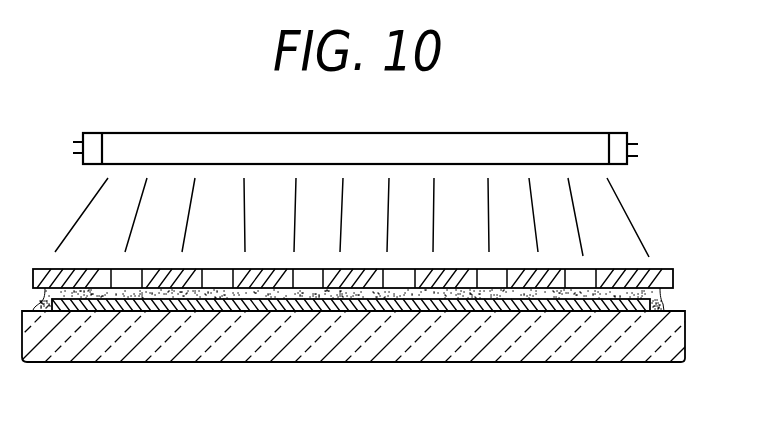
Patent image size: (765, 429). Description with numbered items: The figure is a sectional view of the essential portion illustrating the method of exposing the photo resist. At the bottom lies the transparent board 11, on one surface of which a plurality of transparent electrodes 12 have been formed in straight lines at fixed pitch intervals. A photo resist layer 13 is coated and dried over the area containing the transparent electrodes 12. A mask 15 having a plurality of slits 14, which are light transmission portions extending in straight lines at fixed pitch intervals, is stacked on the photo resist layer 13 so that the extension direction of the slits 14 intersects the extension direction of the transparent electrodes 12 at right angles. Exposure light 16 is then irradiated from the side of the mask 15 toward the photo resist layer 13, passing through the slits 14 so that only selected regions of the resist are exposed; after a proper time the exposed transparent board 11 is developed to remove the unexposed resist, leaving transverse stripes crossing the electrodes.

The transparent board 11 is at (685, 345).
The transparent electrodes 12 is at (390, 308).
The photo resist layer 13 is at (668, 305).
The slits 14 is at (495, 270).
The mask 15 is at (673, 282).
The exposure light 16 is at (634, 230).